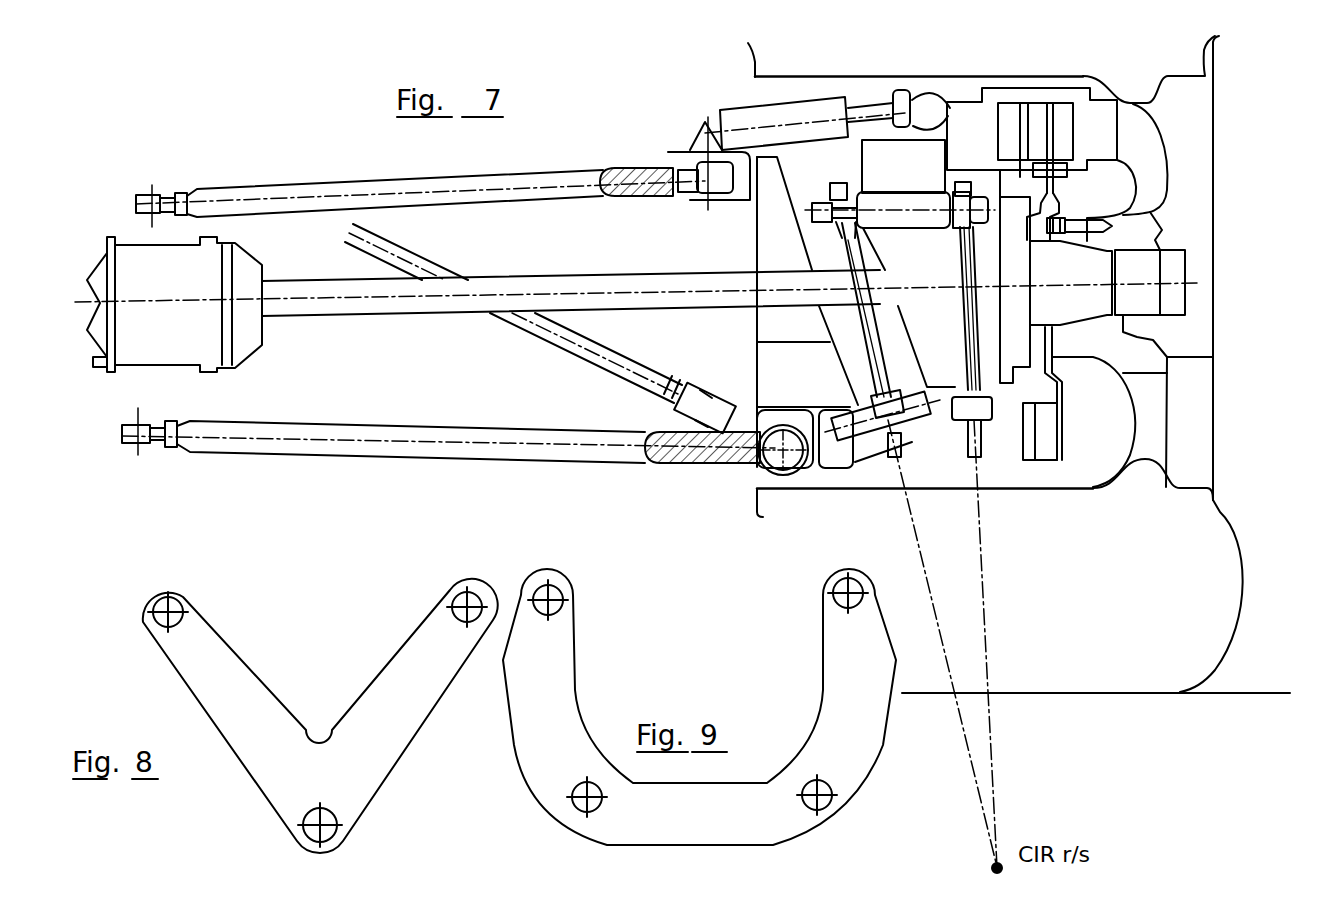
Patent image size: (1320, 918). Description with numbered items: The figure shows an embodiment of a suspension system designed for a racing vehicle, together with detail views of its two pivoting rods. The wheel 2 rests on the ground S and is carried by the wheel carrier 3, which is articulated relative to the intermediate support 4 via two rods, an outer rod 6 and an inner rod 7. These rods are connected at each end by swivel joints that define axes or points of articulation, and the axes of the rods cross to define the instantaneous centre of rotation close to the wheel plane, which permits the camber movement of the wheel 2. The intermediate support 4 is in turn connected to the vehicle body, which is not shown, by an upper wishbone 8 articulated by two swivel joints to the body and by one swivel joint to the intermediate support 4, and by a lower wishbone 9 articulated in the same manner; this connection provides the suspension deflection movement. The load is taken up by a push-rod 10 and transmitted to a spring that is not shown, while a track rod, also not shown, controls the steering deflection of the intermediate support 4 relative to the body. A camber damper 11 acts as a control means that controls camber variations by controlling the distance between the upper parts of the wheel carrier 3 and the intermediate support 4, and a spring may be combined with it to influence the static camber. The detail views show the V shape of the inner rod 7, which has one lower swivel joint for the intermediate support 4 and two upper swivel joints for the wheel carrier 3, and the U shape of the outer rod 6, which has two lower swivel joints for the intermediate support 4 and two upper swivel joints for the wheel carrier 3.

In FIG. 7, the wheel 2 is at (1157, 367).
In FIG. 7, the wheel carrier 3 is at (913, 167).
In FIG. 7, the intermediate support 4 is at (768, 241).
In FIG. 7, the outer rod 6 is at (963, 323).
In FIG. 9, the outer rod 6 is at (847, 685).
In FIG. 7, the inner rod 7 is at (868, 341).
In FIG. 8, the inner rod 7 is at (400, 667).
In FIG. 7, the upper wishbone 8 is at (305, 192).
In FIG. 7, the lower wishbone 9 is at (378, 433).
In FIG. 7, the push-rod 10 is at (625, 367).
In FIG. 7, the camber damper 11 is at (737, 113).
In FIG. 7, the ground S is at (1242, 683).